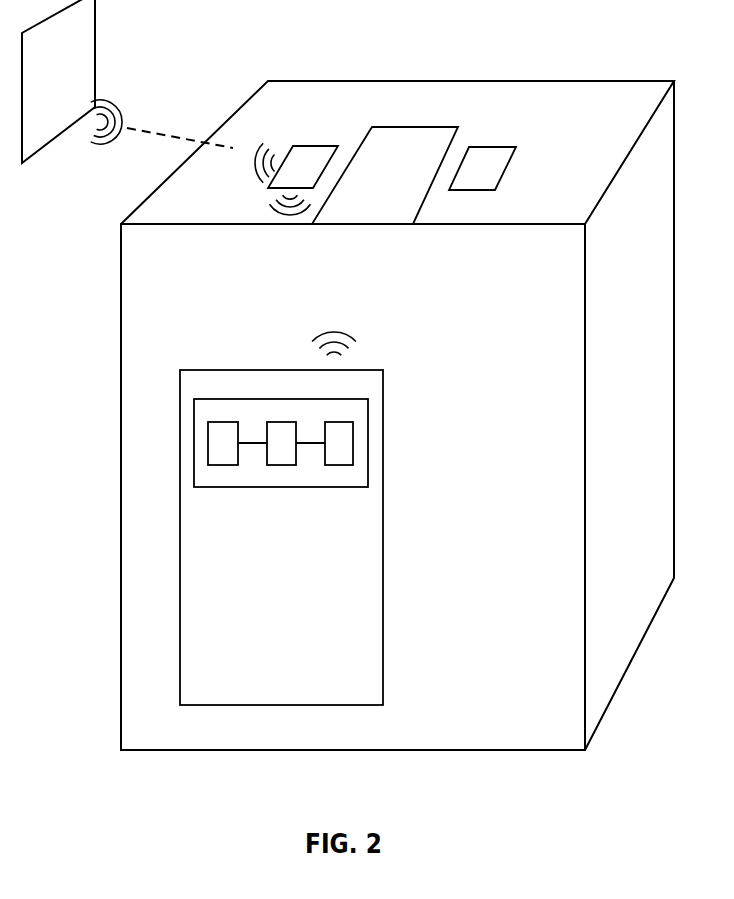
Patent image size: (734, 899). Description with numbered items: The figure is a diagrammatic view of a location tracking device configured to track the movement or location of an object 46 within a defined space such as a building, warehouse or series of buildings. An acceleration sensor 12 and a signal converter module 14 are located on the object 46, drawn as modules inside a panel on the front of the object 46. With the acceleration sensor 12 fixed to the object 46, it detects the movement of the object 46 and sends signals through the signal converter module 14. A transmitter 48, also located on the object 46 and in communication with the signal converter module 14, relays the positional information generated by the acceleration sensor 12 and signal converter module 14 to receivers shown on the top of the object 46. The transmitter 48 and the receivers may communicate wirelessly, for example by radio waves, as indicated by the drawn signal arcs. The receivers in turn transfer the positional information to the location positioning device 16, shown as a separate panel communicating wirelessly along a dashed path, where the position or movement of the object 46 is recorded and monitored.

The acceleration sensor 12 is at (223, 465).
The signal converter module 14 is at (272, 465).
The location positioning device 16 is at (95, 47).
The object 46 is at (383, 537).
The transmitter 48 is at (353, 444).